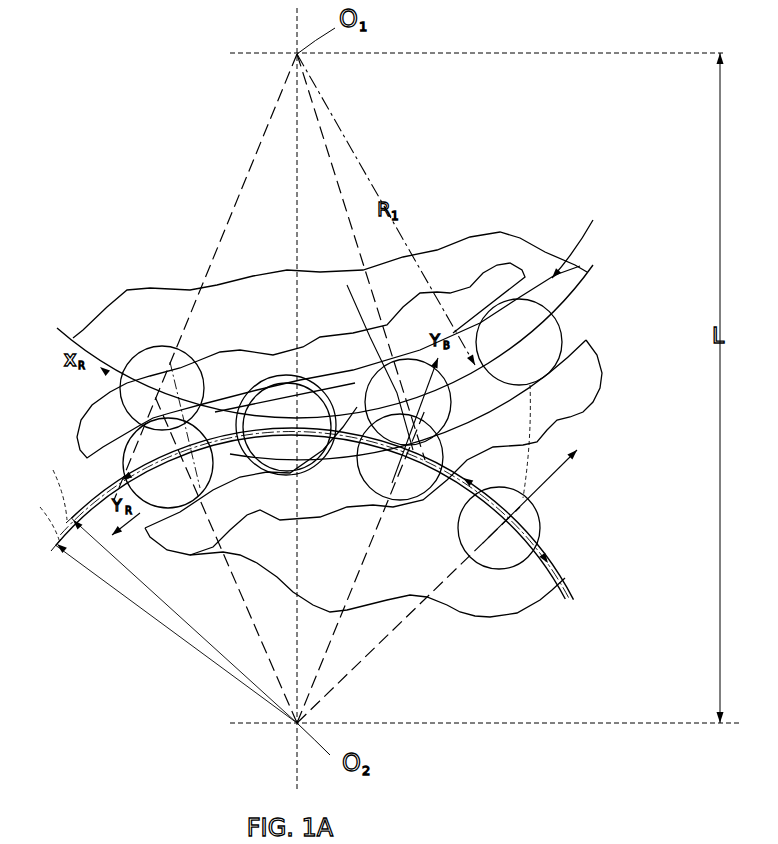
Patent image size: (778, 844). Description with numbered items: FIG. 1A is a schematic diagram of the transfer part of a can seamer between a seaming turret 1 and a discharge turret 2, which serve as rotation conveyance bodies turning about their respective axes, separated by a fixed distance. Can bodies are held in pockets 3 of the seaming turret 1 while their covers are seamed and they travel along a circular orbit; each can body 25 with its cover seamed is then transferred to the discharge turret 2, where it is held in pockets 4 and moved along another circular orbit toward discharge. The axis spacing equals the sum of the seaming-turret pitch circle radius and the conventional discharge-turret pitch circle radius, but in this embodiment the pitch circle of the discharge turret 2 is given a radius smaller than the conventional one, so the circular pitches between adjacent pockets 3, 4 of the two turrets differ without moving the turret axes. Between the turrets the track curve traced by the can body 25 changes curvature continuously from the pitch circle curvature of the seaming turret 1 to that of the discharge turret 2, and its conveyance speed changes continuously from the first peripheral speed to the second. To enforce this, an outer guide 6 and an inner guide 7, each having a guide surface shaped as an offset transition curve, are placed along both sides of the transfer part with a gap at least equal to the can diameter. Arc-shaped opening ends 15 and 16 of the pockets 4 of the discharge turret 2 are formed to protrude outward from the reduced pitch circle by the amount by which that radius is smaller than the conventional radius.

The seaming turret 1 is at (247, 330).
The discharge turret 2 is at (329, 567).
The pocket 3 is at (141, 350).
The pocket 4 is at (503, 560).
The outer guide 6 is at (103, 412).
The inner guide 7 is at (573, 390).
The arc-shaped opening end 15 is at (530, 495).
The arc-shaped opening end 16 is at (550, 540).
The can body 25 is at (553, 340).